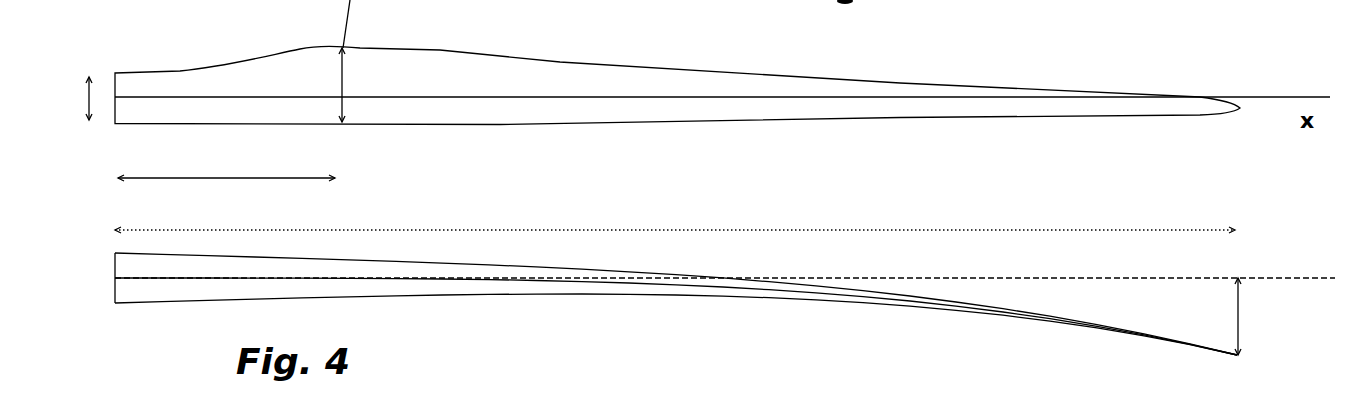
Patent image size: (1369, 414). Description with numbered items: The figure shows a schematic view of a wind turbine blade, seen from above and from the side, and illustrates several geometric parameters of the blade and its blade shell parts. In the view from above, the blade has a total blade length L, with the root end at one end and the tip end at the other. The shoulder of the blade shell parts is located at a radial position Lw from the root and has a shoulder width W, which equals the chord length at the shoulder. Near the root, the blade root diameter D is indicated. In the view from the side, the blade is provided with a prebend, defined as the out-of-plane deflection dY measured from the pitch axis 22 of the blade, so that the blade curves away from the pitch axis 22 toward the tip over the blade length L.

The pitch axis 22 is at (560, 97).
The blade root diameter D is at (81, 98).
The shoulder width W is at (352, 85).
The shoulder position Lw is at (226, 168).
The blade length L is at (675, 221).
The prebend dY is at (1252, 316).